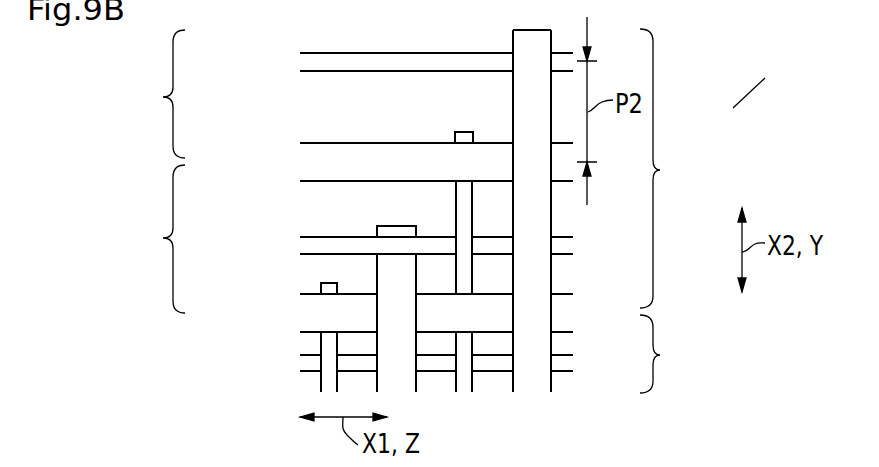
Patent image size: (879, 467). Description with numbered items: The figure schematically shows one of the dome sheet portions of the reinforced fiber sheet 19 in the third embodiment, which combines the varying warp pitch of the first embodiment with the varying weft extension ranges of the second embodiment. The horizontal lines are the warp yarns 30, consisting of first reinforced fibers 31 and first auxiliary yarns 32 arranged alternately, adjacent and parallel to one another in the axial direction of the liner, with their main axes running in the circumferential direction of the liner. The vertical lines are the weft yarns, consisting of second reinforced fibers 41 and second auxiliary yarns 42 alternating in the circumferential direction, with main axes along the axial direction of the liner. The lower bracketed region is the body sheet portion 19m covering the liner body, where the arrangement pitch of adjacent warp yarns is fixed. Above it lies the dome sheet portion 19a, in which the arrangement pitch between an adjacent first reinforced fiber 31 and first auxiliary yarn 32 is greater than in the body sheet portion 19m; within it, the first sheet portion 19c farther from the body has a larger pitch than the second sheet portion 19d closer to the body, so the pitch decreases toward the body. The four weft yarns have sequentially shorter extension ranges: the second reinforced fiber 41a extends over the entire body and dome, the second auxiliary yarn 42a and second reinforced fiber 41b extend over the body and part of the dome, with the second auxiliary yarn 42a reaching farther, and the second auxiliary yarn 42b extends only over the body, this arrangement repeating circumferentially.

The reinforced fiber sheet 19 is at (733, 108).
The dome sheet portion 19a is at (676, 168).
The first sheet portion 19c is at (151, 94).
The second sheet portion 19d is at (151, 239).
The body sheet portion 19m is at (676, 354).
The warp yarns 30 is at (436, 212).
The first reinforced fiber 31 is at (300, 143).
The first auxiliary yarn 32 is at (300, 237).
The second reinforced fiber 41 is at (512, 97).
The second reinforced fiber 41a is at (530, 30).
The second reinforced fiber 41b is at (397, 226).
The second auxiliary yarn 42 is at (456, 203).
The second auxiliary yarn 42a is at (463, 132).
The second auxiliary yarn 42b is at (328, 283).